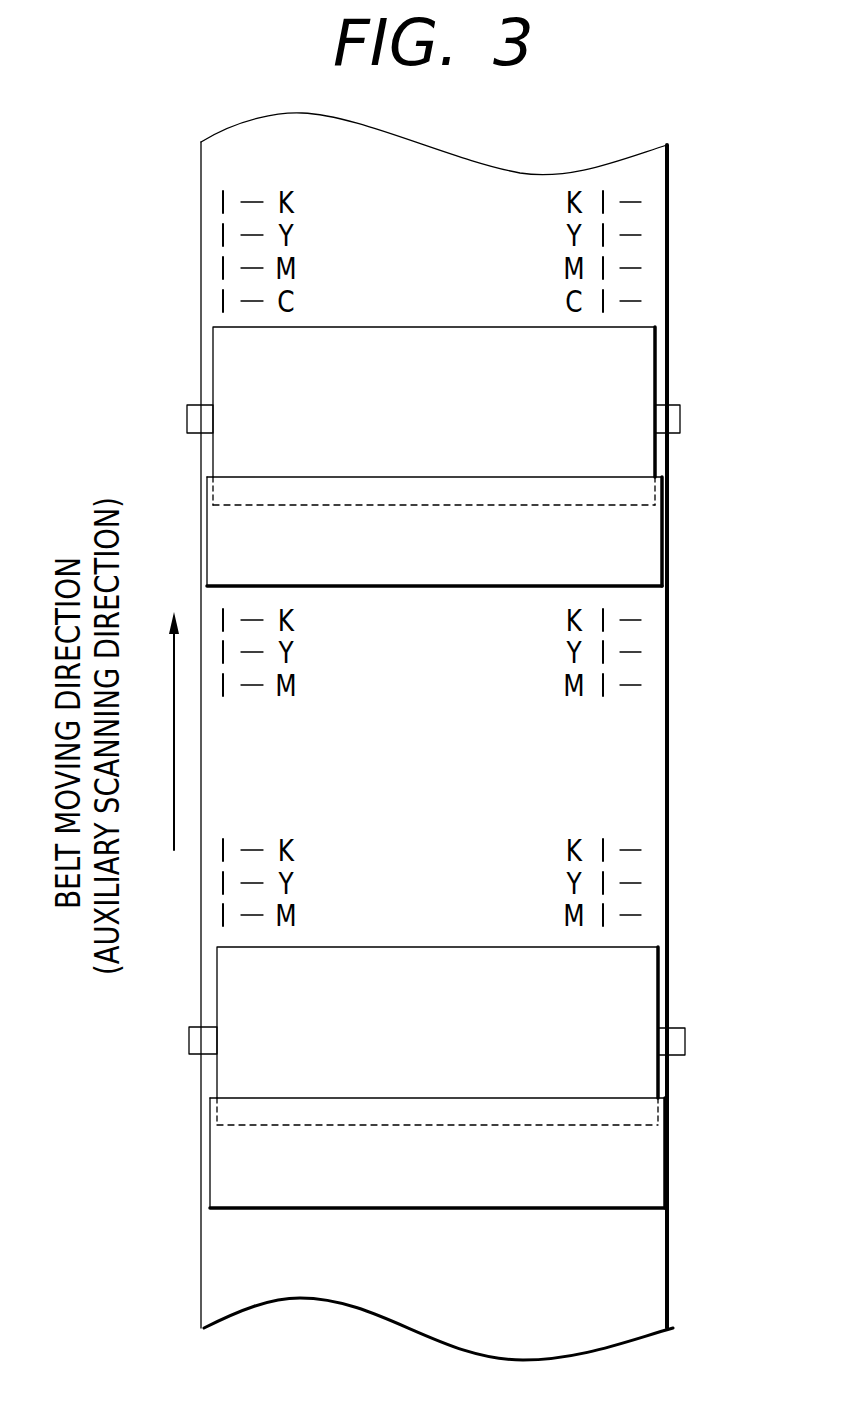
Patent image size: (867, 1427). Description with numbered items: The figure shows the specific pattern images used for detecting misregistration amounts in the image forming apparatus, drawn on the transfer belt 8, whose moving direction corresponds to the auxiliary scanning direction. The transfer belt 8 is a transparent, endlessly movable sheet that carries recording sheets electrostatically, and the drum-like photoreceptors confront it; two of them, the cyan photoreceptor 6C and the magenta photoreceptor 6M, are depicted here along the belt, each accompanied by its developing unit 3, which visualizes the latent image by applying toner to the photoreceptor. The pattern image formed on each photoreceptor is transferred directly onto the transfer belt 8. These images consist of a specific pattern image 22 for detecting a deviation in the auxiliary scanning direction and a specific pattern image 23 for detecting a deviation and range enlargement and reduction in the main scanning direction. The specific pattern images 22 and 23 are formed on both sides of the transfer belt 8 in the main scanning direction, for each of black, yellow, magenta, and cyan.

The transfer belt 8 is at (665, 803).
The photoreceptor 6C is at (643, 375).
The photoreceptor 6M is at (647, 995).
The developing unit 3 is at (643, 552).
The specific pattern image 22 is at (627, 203).
The specific pattern image 23 is at (603, 197).